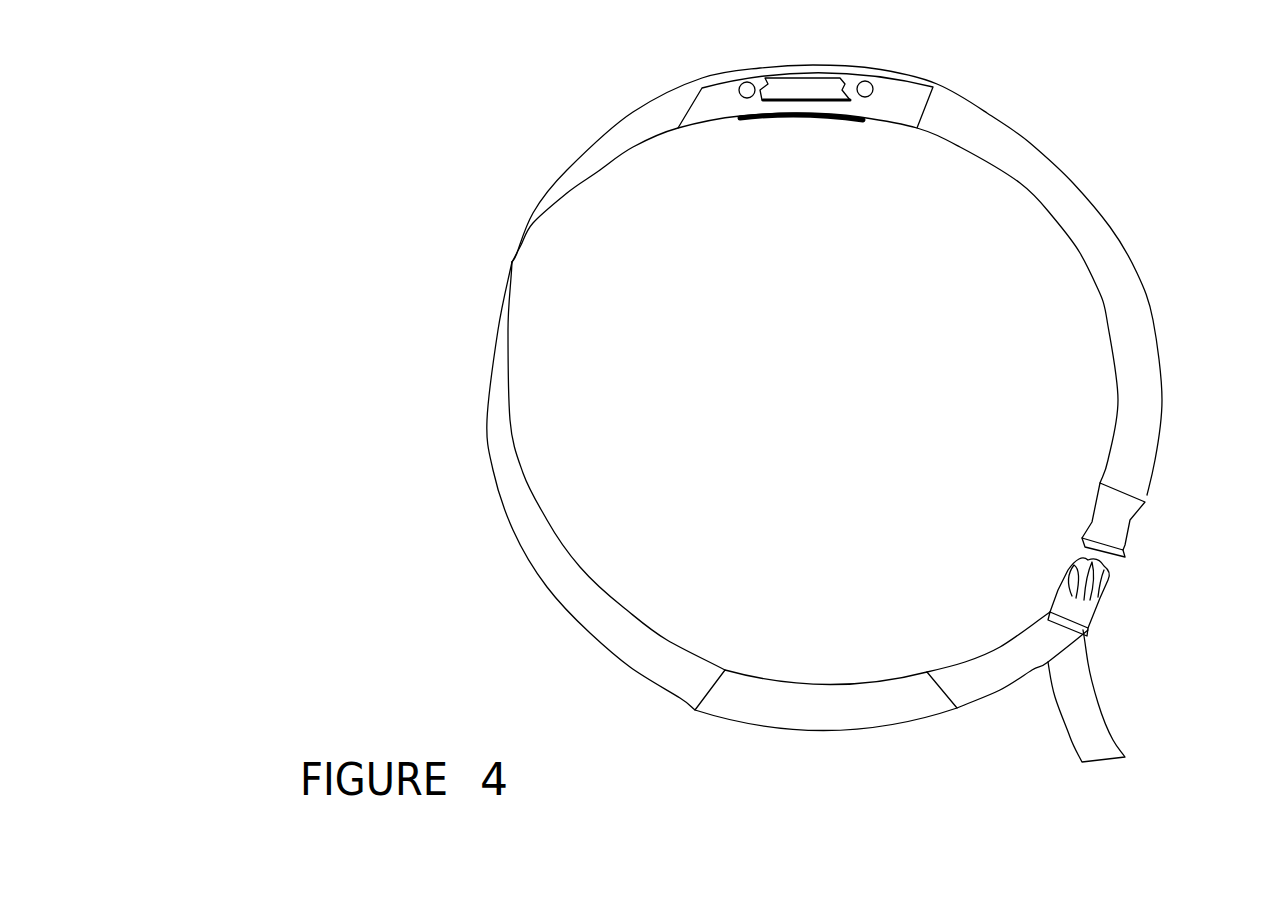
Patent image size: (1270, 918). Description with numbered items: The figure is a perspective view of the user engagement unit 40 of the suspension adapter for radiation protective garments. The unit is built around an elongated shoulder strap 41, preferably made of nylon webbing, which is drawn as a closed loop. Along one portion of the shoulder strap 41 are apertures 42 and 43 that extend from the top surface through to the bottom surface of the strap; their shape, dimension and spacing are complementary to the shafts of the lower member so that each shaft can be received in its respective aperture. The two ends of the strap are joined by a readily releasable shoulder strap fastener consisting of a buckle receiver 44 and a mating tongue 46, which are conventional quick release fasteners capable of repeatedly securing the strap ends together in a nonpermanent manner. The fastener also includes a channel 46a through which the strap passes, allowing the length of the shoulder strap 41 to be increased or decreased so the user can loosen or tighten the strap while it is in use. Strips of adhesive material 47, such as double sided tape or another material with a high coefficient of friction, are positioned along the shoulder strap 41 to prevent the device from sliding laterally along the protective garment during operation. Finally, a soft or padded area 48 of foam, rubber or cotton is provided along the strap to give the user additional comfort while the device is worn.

The user engagement unit 40 is at (398, 122).
The elongated shoulder strap 41 is at (1015, 153).
The aperture 42 is at (745, 84).
The aperture 43 is at (867, 85).
The buckle receiver 44 is at (1130, 523).
The tongue 46 is at (1107, 595).
The channel 46a is at (1053, 605).
The strips of adhesive material 47 is at (815, 82).
The padded area 48 is at (827, 735).